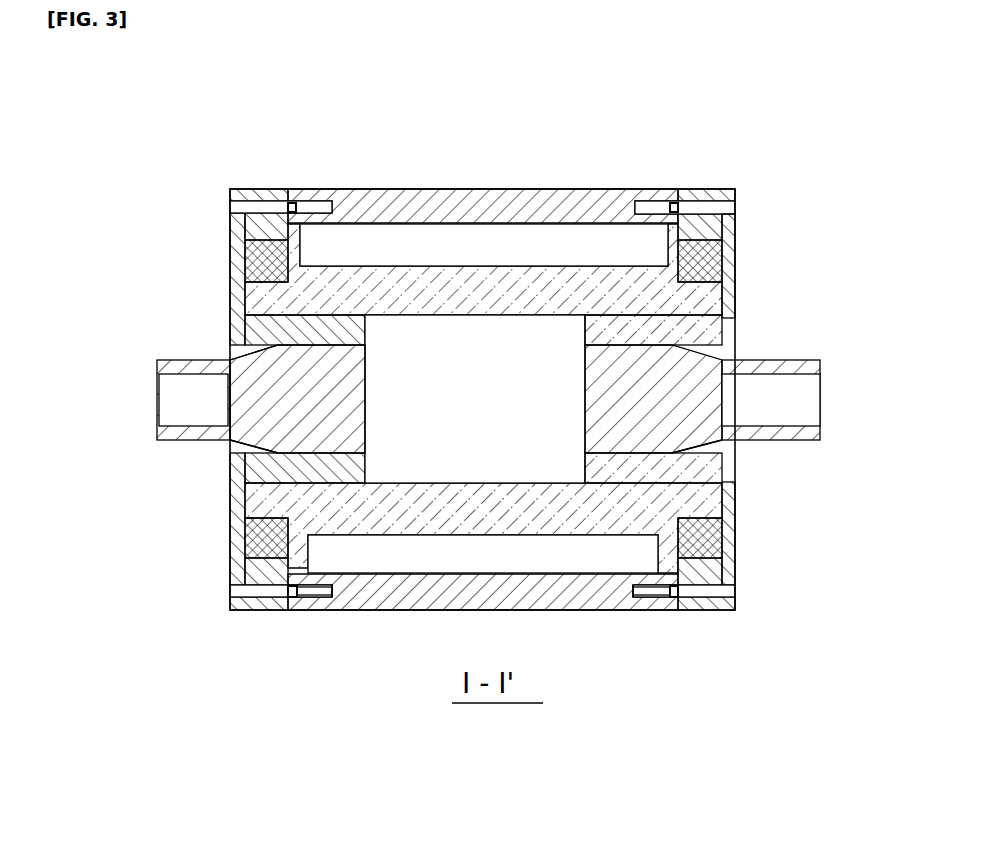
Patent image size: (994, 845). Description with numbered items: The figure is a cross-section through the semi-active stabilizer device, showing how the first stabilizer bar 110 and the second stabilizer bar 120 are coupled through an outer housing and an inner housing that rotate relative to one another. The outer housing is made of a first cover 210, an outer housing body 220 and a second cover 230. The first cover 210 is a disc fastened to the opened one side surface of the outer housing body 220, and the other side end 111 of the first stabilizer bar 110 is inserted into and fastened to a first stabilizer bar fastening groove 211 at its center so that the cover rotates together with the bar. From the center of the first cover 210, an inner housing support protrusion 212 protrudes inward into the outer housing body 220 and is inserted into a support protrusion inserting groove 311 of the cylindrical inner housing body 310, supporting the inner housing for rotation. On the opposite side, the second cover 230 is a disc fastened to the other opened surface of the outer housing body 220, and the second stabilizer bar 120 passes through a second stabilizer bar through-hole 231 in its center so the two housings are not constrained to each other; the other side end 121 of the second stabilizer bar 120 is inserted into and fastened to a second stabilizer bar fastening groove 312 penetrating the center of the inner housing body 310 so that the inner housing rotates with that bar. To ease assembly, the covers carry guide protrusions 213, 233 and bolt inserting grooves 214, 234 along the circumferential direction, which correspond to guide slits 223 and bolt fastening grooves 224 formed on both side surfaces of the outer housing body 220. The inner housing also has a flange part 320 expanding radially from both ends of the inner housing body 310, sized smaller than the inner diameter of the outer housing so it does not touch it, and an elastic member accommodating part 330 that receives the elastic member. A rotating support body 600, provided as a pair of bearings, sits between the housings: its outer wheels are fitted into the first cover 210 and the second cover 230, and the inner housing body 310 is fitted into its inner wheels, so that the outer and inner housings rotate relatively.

The first stabilizer bar 110 is at (158, 365).
The other side end of the first stabilizer bar 111 is at (260, 372).
The second stabilizer bar 120 is at (810, 366).
The other side end of the second stabilizer bar 121 is at (660, 342).
The first cover 210 is at (230, 570).
The first stabilizer bar fastening groove 211 is at (236, 449).
The inner housing support protrusion 212 is at (337, 327).
The guide protrusion 213 is at (287, 590).
The bolt inserting groove 214 is at (237, 592).
The outer housing body 220 is at (382, 594).
The guide slit 223 is at (310, 600).
The bolt fastening groove 224 is at (320, 600).
The second cover 230 is at (725, 572).
The second stabilizer bar through-hole 231 is at (727, 340).
The guide protrusion 233 is at (690, 612).
The bolt inserting groove 234 is at (735, 588).
The inner housing body 310 is at (483, 283).
The support protrusion inserting groove 311 is at (413, 357).
The second stabilizer bar fastening groove 312 is at (712, 446).
The flange part 320 is at (668, 222).
The elastic member accommodating part 330 is at (552, 238).
The rotating support body 600 is at (258, 258).